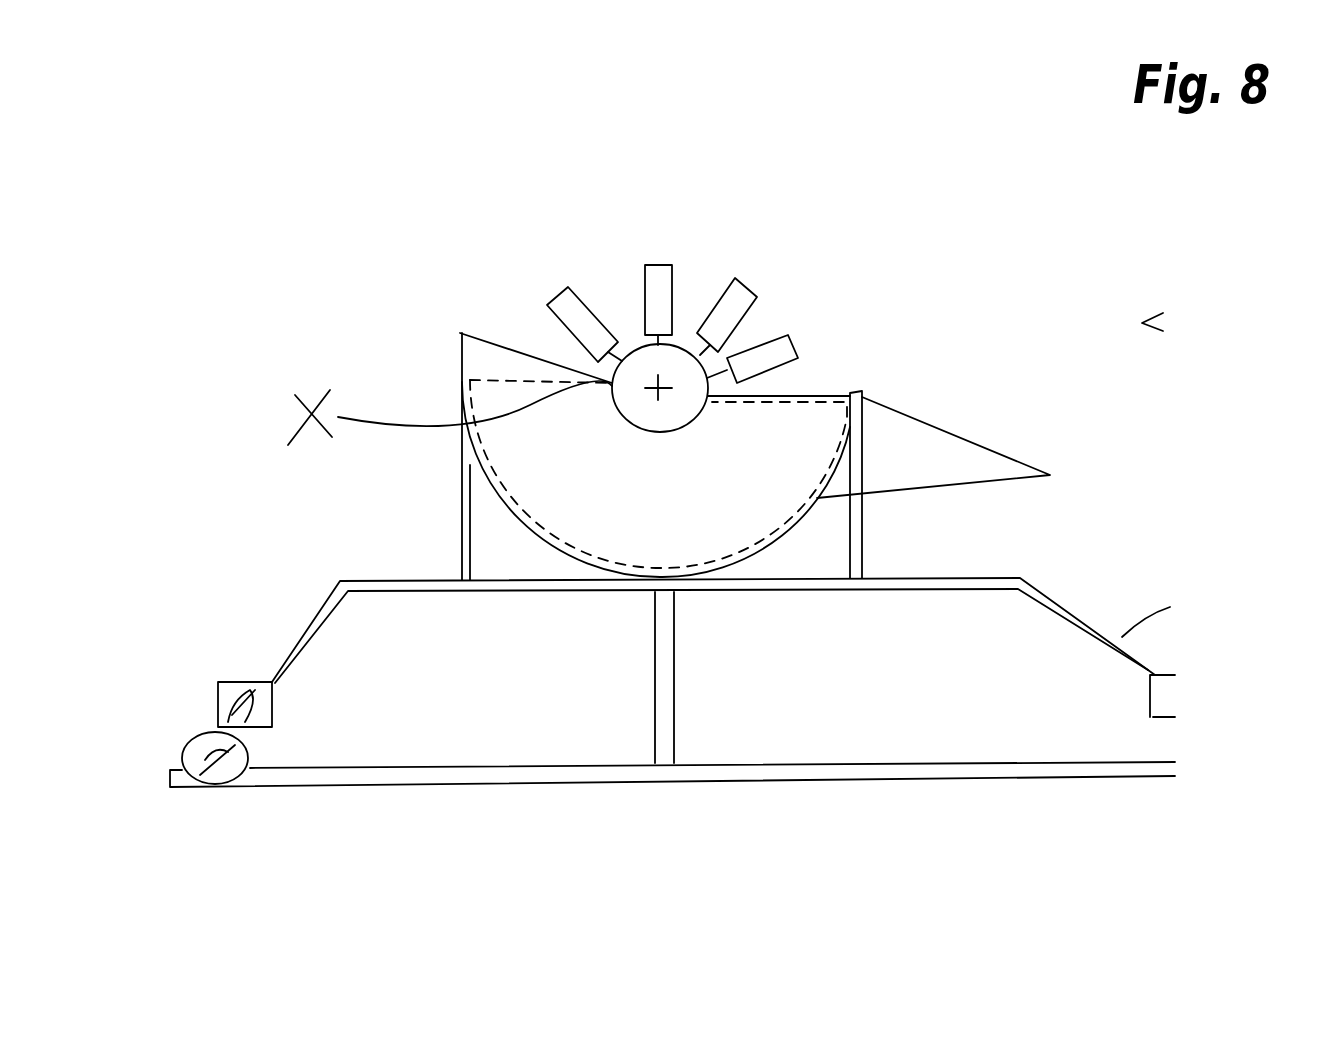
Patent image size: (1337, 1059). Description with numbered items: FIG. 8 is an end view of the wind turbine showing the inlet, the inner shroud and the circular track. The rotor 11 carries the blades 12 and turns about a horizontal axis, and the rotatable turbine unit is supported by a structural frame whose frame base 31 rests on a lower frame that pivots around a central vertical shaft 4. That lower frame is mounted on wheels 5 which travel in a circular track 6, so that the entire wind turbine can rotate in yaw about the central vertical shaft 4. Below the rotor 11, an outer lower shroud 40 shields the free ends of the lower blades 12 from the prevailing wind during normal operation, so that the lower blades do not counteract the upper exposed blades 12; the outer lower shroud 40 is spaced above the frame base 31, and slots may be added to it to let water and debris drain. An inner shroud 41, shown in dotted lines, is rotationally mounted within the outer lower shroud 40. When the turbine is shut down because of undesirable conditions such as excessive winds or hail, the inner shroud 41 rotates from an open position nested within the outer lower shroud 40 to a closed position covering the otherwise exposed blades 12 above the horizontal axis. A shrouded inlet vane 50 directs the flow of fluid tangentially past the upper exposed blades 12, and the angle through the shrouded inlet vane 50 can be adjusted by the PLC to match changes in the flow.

The central vertical shaft 4 is at (678, 690).
The wheels 5 is at (188, 745).
The circular track 6 is at (237, 683).
The rotor 11 is at (712, 392).
The blades 12 is at (668, 262).
The frame base 31 is at (988, 572).
The outer lower shroud 40 is at (482, 340).
The inner shroud 41 is at (528, 447).
The shrouded inlet vane 50 is at (963, 462).